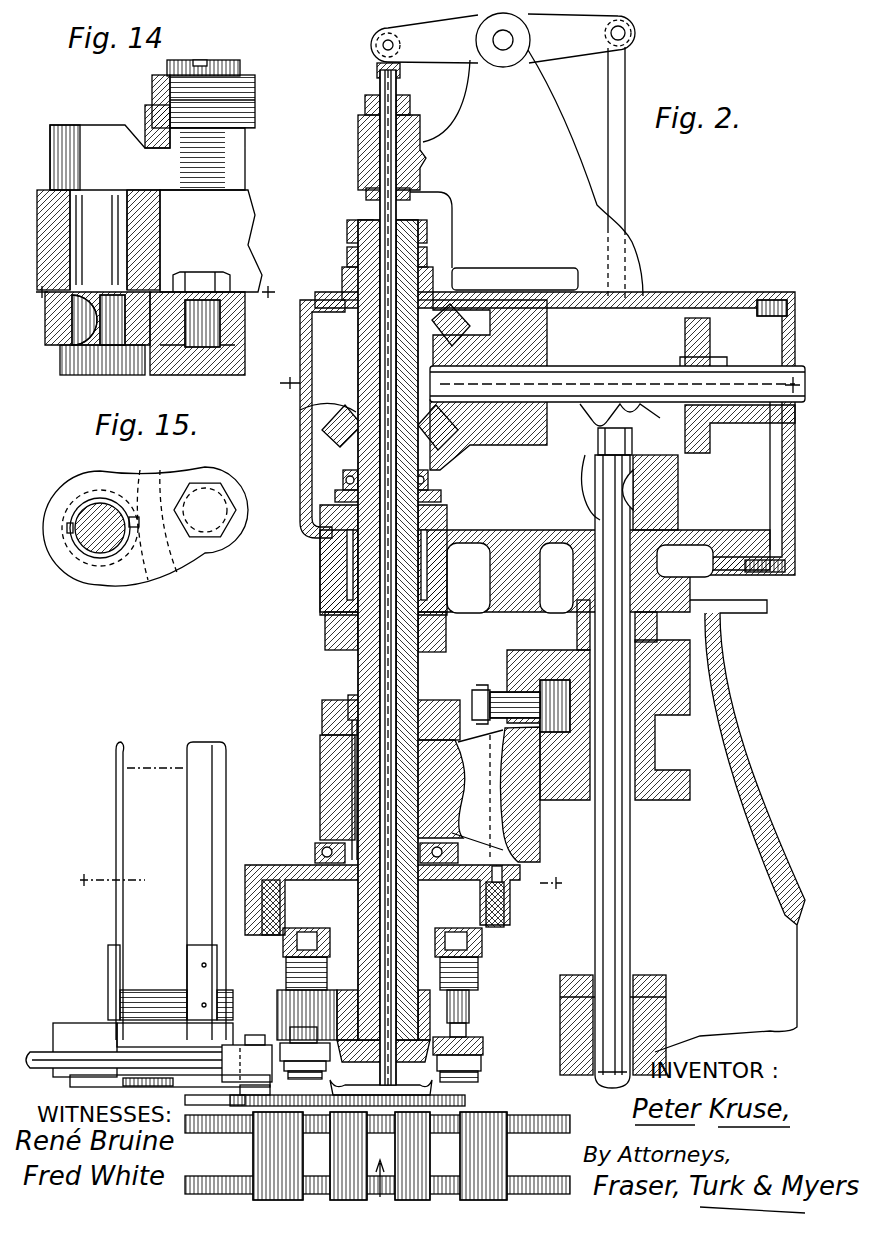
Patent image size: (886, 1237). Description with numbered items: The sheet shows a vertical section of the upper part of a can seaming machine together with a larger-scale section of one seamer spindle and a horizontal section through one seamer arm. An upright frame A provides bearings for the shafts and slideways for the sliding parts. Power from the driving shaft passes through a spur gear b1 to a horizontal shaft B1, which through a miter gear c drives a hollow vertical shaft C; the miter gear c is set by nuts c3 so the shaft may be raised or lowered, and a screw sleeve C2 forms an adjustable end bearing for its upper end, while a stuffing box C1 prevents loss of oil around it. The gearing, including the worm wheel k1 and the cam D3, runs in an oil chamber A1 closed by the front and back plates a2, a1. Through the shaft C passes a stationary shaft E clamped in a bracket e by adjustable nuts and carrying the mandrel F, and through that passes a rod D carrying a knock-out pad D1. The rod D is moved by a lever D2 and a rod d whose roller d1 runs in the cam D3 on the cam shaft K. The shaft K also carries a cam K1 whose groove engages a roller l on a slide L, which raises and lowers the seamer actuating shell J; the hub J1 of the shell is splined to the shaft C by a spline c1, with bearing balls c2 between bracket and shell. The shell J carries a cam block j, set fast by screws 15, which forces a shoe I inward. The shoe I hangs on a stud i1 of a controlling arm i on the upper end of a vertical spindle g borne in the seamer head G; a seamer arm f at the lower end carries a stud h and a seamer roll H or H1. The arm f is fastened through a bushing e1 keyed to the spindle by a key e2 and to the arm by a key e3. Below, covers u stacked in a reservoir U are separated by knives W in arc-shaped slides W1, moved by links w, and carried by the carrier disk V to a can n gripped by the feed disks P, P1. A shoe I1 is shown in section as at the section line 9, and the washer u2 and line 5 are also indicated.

In FIG. 14, the stud i1 is at (215, 62).
In FIG. 2, the stud i1 is at (458, 959).
In FIG. 14, the shoe I1 is at (250, 100).
In FIG. 14, the controlling arm i is at (147, 147).
In FIG. 2, the controlling arm i is at (315, 953).
In FIG. 14, the vertical spindle g is at (98, 240).
In FIG. 15, the vertical spindle g is at (100, 548).
In FIG. 14, the seamer head G is at (211, 241).
In FIG. 2, the seamer head G is at (458, 1022).
In FIG. 14, the seamer arm f is at (223, 278).
In FIG. 15, the seamer arm f is at (167, 485).
In FIG. 14, the screws 15 is at (158, 291).
In FIG. 14, the seamer roll H1 is at (212, 333).
In FIG. 15, the seamer roll H1 is at (232, 556).
In FIG. 14, the stud h is at (202, 324).
In FIG. 14, the key e2 is at (60, 330).
In FIG. 15, the key e2 is at (68, 531).
In FIG. 2, the key e2 is at (366, 193).
In FIG. 14, the bushing e1 is at (128, 333).
In FIG. 15, the bushing e1 is at (118, 553).
In FIG. 2, the bushing e1 is at (371, 103).
In FIG. 14, the key e3 is at (143, 362).
In FIG. 15, the key e3 is at (134, 516).
In FIG. 2, the frame A is at (560, 622).
In FIG. 2, the oil chamber A1 is at (488, 408).
In FIG. 2, the back plate a1 is at (803, 300).
In FIG. 2, the front plate a2 is at (300, 452).
In FIG. 2, the spur gear b1 is at (737, 384).
In FIG. 2, the horizontal shaft B1 is at (617, 384).
In FIG. 2, the miter gear c is at (396, 377).
In FIG. 2, the nuts c3 is at (312, 404).
In FIG. 2, the screw sleeve C2 is at (384, 361).
In FIG. 2, the stuffing box C1 is at (350, 606).
In FIG. 2, the hub J1 is at (352, 695).
In FIG. 2, the spline c1 is at (350, 762).
In FIG. 2, the slide L is at (475, 781).
In FIG. 2, the roller l is at (548, 700).
In FIG. 2, the bearing balls c2 is at (320, 848).
In FIG. 2, the seamer actuating shell J is at (252, 926).
In FIG. 2, the cam block j is at (383, 900).
In FIG. 2, the shoe I is at (286, 946).
In FIG. 2, the mandrel F is at (345, 1048).
In FIG. 2, the seamer roll H is at (481, 1066).
In FIG. 2, the knock-out pad D1 is at (420, 1088).
In FIG. 2, the washer u2 is at (348, 1071).
In FIG. 2, the rotary feeder P1 is at (520, 1130).
In FIG. 2, the can n is at (370, 1168).
In FIG. 2, the reservoir U is at (167, 891).
In FIG. 2, the can cover u is at (125, 998).
In FIG. 2, the links w is at (40, 1060).
In FIG. 2, the carrier disk V is at (177, 1100).
In FIG. 2, the separating knife W is at (170, 1098).
In FIG. 2, the rotary feeder P is at (220, 1122).
In FIG. 2, the arc-shaped slide W1 is at (263, 1095).
In FIG. 2, the cam shaft K is at (632, 846).
In FIG. 2, the cam K1 is at (662, 720).
In FIG. 2, the roller d1 is at (634, 416).
In FIG. 2, the cam D3 is at (568, 438).
In FIG. 2, the worm wheel k1 is at (580, 485).
In FIG. 2, the rod d is at (612, 146).
In FIG. 2, the lever D2 is at (503, 45).
In FIG. 2, the bracket e is at (381, 152).
In FIG. 2, the vertical shaft C is at (362, 385).
In FIG. 2, the stationary shaft E is at (379, 207).
In FIG. 2, the rod D is at (392, 209).
In FIG. 2, the section line 5- 5 is at (544, 384).
In FIG. 2, the section line 9- 9 is at (318, 886).